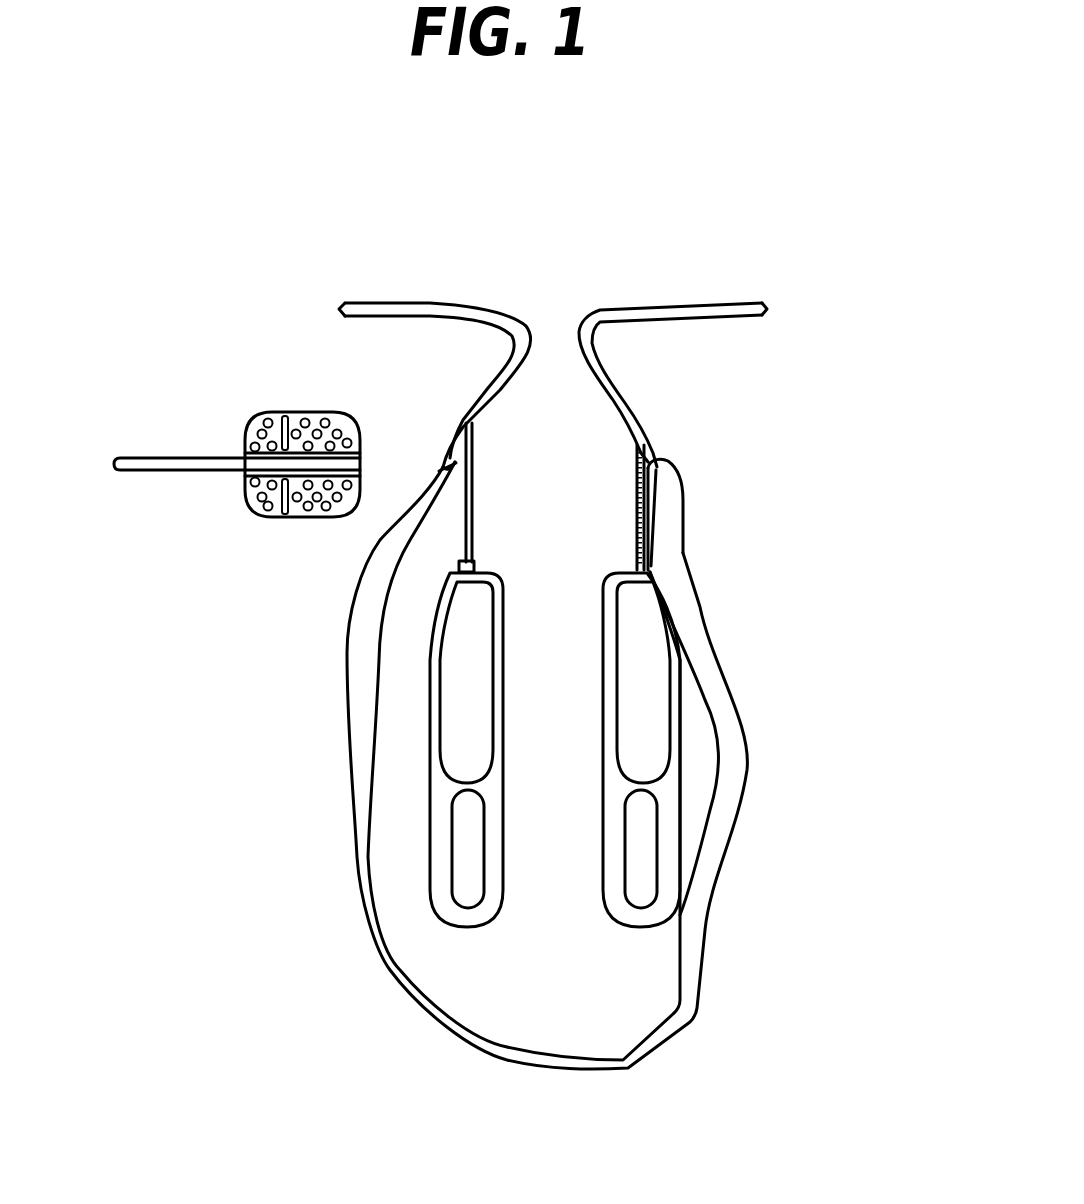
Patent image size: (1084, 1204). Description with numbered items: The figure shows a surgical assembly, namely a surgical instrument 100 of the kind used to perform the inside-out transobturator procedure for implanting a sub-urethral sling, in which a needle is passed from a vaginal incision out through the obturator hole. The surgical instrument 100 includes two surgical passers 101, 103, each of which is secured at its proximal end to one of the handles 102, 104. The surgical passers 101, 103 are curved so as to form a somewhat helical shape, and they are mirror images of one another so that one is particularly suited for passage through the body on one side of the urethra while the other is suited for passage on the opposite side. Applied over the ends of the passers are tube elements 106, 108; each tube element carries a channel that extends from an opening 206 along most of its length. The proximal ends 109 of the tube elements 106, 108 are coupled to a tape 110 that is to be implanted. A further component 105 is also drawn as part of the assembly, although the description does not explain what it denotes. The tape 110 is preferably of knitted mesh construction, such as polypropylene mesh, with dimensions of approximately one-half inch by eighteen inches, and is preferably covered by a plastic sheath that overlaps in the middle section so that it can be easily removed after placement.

The surgical instrument 100 is at (782, 770).
The surgical passer 101 is at (637, 496).
The handle 102 is at (605, 665).
The surgical passer 103 is at (470, 484).
The handle 104 is at (484, 614).
The earplug 105 is at (204, 446).
The tube element 106 is at (683, 302).
The tube element 108 is at (430, 302).
The proximal end 109 is at (446, 440).
The tape 110 is at (700, 983).
The opening 206 is at (487, 369).